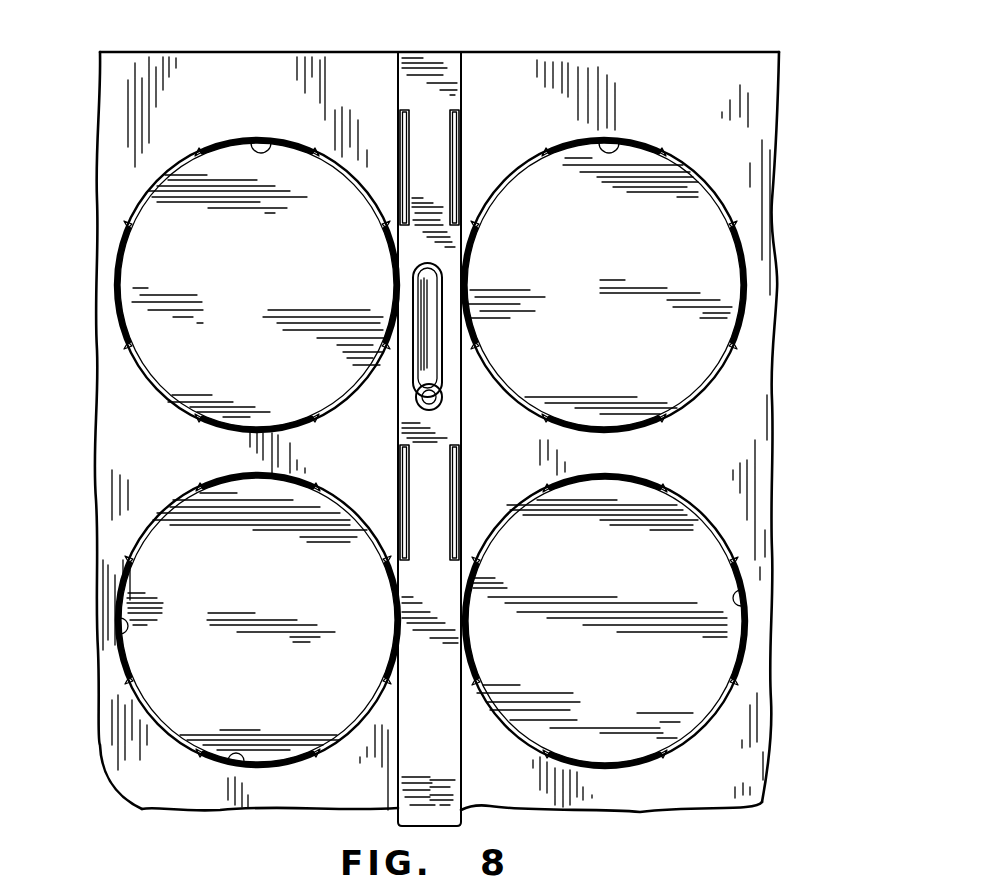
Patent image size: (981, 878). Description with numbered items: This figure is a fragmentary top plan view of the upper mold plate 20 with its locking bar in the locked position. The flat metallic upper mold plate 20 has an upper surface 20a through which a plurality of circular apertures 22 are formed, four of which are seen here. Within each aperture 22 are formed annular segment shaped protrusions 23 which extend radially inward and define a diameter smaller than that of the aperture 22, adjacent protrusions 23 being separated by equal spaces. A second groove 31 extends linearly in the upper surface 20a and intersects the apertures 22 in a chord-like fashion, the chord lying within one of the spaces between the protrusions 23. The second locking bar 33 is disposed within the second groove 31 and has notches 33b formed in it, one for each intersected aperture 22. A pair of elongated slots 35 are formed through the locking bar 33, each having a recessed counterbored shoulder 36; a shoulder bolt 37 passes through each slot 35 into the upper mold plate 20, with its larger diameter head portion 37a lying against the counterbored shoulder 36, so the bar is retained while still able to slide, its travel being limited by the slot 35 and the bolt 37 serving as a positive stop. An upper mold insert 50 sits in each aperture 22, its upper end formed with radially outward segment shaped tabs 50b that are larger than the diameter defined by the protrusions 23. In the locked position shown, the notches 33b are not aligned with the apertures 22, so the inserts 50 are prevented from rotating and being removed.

The upper mold plate 20 is at (822, 93).
The upper surface 20a is at (583, 72).
The aperture 22 is at (255, 134).
The annular segment shaped protrusion 23 is at (334, 150).
The second groove 31 is at (401, 526).
The second locking bar 33 is at (416, 743).
The notch 33b is at (402, 113).
The elongated slot 35 is at (434, 333).
The recessed counterbored shoulder 36 is at (443, 278).
The shoulder bolt 37 is at (420, 398).
The head portion 37a is at (440, 402).
The upper mold insert 50 is at (250, 320).
The segment shaped tab 50b is at (347, 172).